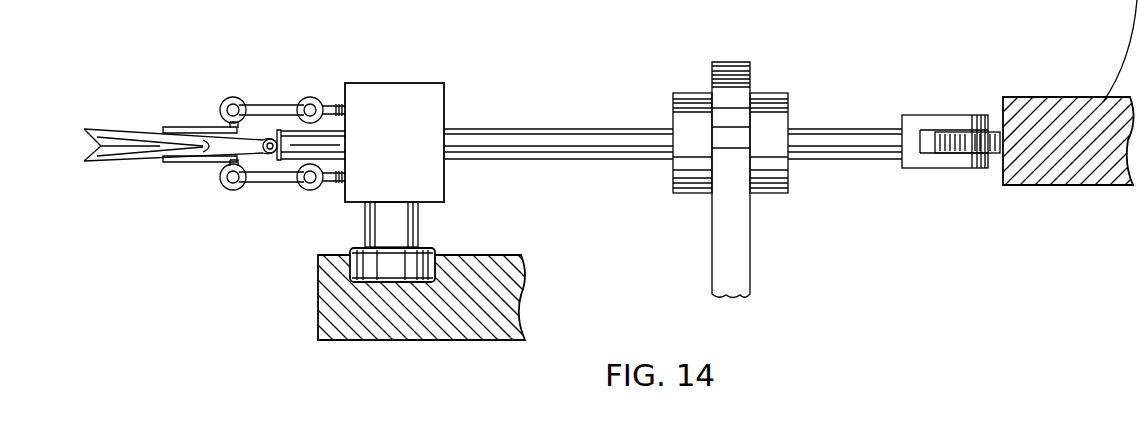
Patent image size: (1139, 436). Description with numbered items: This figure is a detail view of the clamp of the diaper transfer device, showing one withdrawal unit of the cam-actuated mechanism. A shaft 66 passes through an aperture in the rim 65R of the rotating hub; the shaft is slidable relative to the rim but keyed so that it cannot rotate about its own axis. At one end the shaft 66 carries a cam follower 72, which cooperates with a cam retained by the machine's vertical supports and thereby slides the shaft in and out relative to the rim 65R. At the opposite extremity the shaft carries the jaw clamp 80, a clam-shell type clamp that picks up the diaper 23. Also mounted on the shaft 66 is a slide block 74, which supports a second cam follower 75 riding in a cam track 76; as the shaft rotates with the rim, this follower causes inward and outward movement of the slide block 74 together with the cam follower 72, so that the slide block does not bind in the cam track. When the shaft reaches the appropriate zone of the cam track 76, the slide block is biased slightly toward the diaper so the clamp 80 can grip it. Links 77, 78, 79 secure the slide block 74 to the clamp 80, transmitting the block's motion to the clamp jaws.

The clamp jaw 23 is at (122, 128).
The jaw clamp 80 is at (192, 128).
The link 79 is at (230, 98).
The link 78 is at (277, 109).
The link 77 is at (328, 98).
The slide block 74 is at (375, 139).
The shaft 66 is at (494, 135).
The rim 65R is at (735, 60).
The cam follower 72 is at (952, 165).
The cam track 76 is at (438, 278).
The cam follower 75 is at (367, 267).